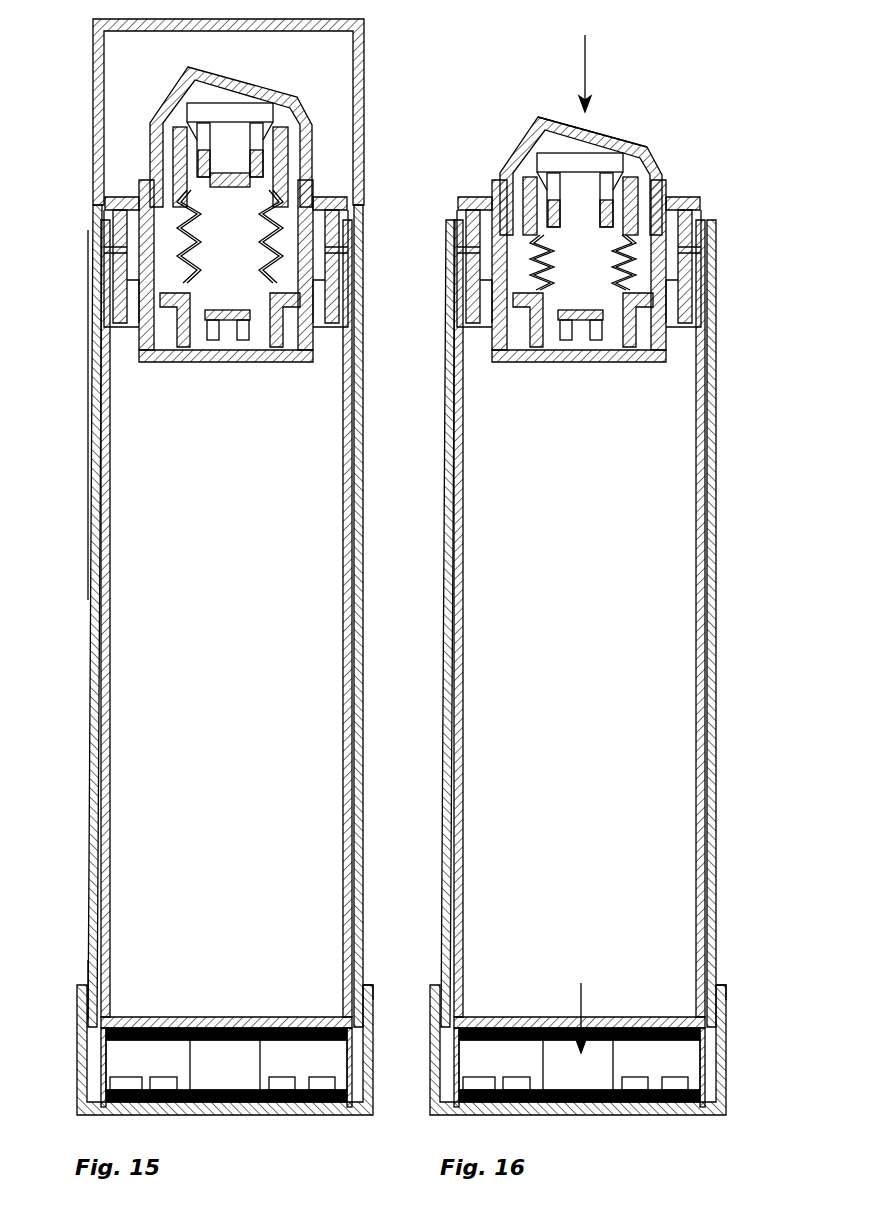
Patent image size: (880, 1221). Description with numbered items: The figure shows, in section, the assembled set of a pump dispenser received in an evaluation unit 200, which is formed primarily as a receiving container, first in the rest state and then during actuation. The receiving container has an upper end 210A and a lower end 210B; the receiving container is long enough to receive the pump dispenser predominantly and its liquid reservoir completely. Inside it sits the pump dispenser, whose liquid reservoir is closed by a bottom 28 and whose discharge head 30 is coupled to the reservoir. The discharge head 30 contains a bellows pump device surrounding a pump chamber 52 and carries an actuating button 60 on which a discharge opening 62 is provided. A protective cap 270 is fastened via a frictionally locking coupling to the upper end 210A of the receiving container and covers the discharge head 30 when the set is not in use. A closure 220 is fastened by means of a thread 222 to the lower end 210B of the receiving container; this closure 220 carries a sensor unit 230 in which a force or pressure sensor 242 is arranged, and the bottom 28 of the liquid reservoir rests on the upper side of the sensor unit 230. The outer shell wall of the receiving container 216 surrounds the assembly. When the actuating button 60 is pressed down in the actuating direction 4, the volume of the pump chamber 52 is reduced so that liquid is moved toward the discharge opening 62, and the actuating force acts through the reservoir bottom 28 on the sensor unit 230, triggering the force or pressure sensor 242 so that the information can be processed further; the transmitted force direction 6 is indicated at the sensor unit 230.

In FIG. 16, the actuating direction 4 is at (662, 73).
In FIG. 16, the dispensing direction arrow 6 is at (617, 996).
In FIG. 15, the bottom 28 is at (132, 1020).
In FIG. 16, the bottom 28 is at (579, 1022).
In FIG. 15, the discharge head 30 is at (126, 178).
In FIG. 16, the discharge head 30 is at (545, 262).
In FIG. 15, the pump chamber 52 is at (230, 236).
In FIG. 16, the pump chamber 52 is at (583, 262).
In FIG. 15, the actuating button 60 is at (316, 138).
In FIG. 16, the actuating button 60 is at (608, 170).
In FIG. 16, the discharge opening 62 is at (535, 129).
In FIG. 15, the evaluation unit 200 is at (88, 418).
In FIG. 16, the evaluation unit 200 is at (544, 618).
In FIG. 15, the upper end of the receiving container 210A is at (88, 248).
In FIG. 15, the lower end of the receiving container 210B is at (80, 970).
In FIG. 15, the outer sleeve 216 is at (95, 594).
In FIG. 16, the outer sleeve 216 is at (578, 623).
In FIG. 15, the closure 220 is at (80, 1044).
In FIG. 16, the closure 220 is at (578, 1050).
In FIG. 15, the thread 222 is at (373, 988).
In FIG. 16, the thread 222 is at (750, 968).
In FIG. 15, the sensor unit 230 is at (303, 1018).
In FIG. 16, the sensor unit 230 is at (619, 1030).
In FIG. 15, the force or pressure sensor 242 is at (225, 1062).
In FIG. 16, the force or pressure sensor 242 is at (619, 1065).
In FIG. 15, the protective cap 270 is at (364, 62).